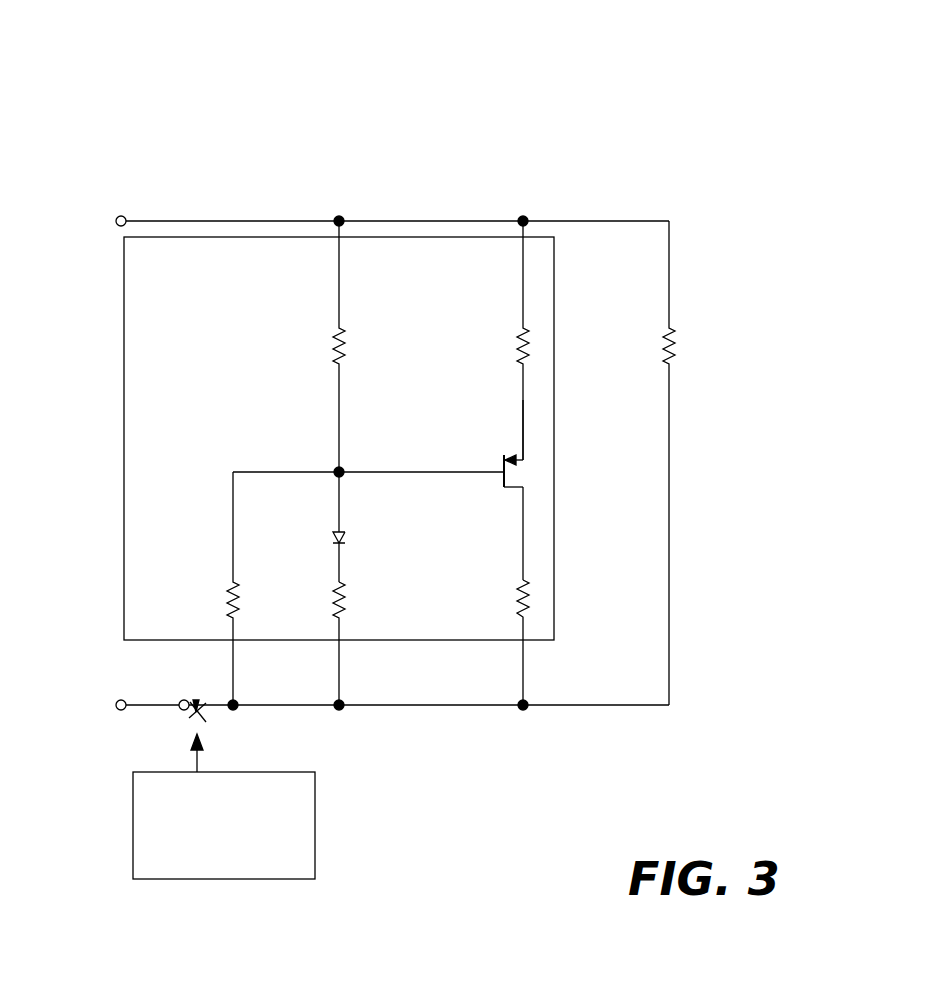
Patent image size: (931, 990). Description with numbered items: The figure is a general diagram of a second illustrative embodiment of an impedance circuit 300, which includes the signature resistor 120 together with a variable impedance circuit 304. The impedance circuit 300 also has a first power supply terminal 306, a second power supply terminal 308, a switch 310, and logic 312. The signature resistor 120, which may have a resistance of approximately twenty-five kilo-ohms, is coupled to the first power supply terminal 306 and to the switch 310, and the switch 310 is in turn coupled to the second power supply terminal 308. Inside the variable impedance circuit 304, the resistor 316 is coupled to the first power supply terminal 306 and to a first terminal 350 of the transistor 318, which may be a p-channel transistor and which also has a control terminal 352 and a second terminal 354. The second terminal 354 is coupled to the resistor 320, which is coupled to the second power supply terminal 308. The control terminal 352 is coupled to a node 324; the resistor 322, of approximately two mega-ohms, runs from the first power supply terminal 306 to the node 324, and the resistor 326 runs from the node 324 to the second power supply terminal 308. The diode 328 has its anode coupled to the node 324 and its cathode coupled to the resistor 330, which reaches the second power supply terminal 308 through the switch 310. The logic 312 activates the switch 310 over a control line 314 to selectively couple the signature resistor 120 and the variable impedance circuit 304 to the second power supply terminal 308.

The impedance circuit 300 is at (692, 92).
The variable impedance circuit 304 is at (124, 345).
The first power supply terminal 306 is at (435, 221).
The second power supply terminal 308 is at (152, 706).
The switch 310 is at (196, 684).
The logic 312 is at (316, 795).
The control line 314 is at (200, 768).
The resistor 316 is at (520, 350).
The transistor 318 is at (520, 467).
The resistor 320 is at (523, 597).
The resistor 322 is at (337, 350).
The node 324 is at (339, 472).
The resistor 326 is at (230, 590).
The diode 328 is at (345, 538).
The resistor 330 is at (345, 597).
The first terminal 350 is at (523, 411).
The control terminal 352 is at (462, 470).
The second terminal 354 is at (523, 562).
The signature resistor 120 is at (670, 350).